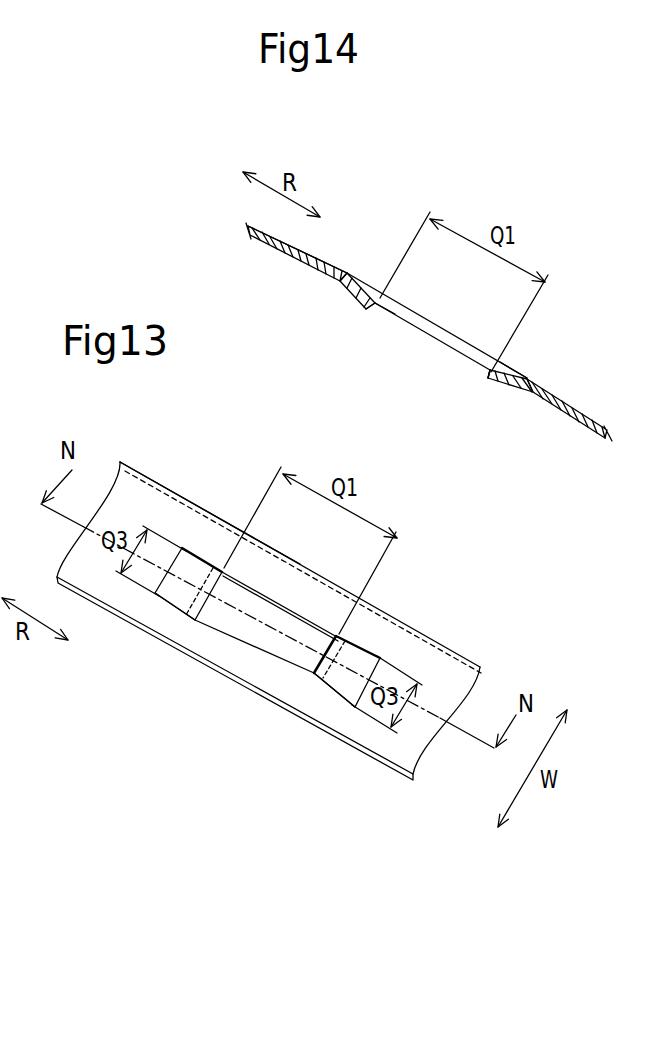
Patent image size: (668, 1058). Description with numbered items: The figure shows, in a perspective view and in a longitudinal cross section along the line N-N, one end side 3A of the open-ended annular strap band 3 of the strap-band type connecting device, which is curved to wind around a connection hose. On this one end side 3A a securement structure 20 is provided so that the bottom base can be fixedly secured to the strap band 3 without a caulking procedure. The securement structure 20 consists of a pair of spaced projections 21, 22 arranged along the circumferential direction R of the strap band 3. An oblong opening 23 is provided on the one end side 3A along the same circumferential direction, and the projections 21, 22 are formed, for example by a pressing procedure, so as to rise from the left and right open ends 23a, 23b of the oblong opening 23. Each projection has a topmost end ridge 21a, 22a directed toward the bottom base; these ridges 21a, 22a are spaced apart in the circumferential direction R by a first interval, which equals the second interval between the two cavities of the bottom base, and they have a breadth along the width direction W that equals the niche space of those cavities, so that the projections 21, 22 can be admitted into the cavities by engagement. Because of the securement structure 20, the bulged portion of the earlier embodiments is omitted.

In FIG. 14, the strap band 3 is at (596, 418).
In FIG. 13, the strap band 3 is at (455, 637).
In FIG. 14, the one end side 3A is at (283, 252).
In FIG. 13, the one end side 3A is at (165, 486).
In FIG. 14, the securement structure 20 is at (517, 358).
In FIG. 13, the securement structure 20 is at (223, 564).
In FIG. 14, the projection 21 is at (353, 292).
In FIG. 13, the projection 21 is at (182, 600).
In FIG. 14, the topmost end ridge 21a is at (375, 308).
In FIG. 13, the topmost end ridge 21a is at (207, 607).
In FIG. 14, the projection 22 is at (503, 388).
In FIG. 13, the projection 22 is at (337, 682).
In FIG. 14, the topmost end ridge 22a is at (486, 376).
In FIG. 13, the topmost end ridge 22a is at (311, 678).
In FIG. 14, the oblong opening 23 is at (443, 341).
In FIG. 13, the oblong opening 23 is at (272, 600).
In FIG. 14, the left open end 23a is at (393, 302).
In FIG. 14, the right open end 23b is at (488, 371).